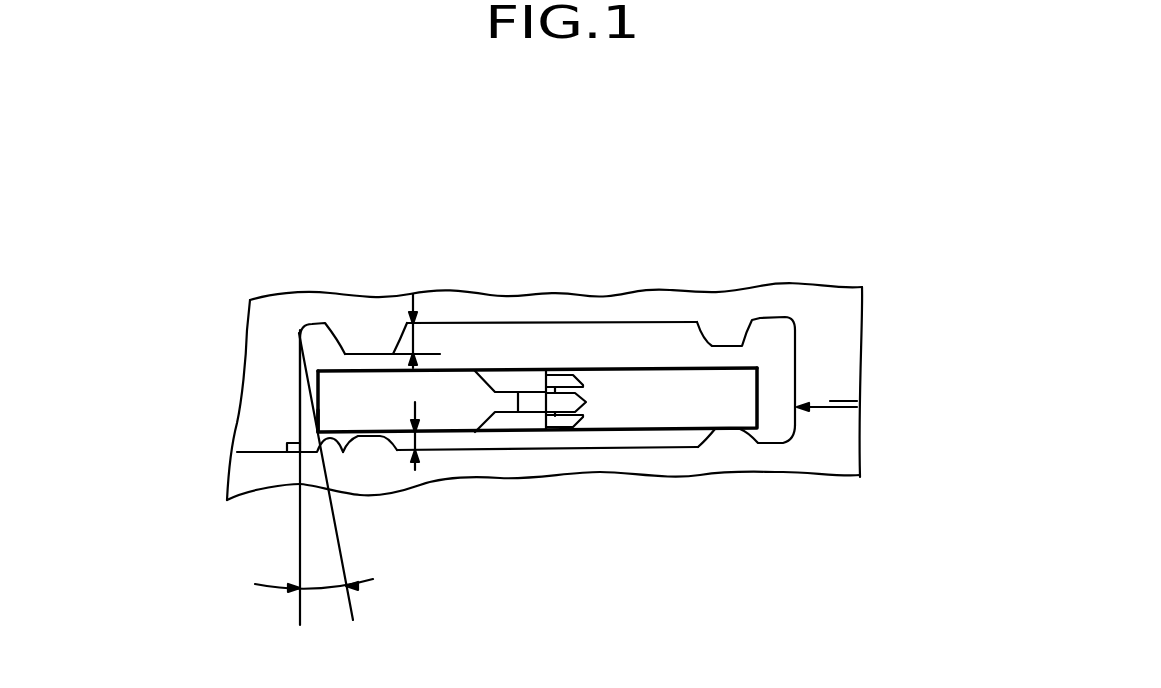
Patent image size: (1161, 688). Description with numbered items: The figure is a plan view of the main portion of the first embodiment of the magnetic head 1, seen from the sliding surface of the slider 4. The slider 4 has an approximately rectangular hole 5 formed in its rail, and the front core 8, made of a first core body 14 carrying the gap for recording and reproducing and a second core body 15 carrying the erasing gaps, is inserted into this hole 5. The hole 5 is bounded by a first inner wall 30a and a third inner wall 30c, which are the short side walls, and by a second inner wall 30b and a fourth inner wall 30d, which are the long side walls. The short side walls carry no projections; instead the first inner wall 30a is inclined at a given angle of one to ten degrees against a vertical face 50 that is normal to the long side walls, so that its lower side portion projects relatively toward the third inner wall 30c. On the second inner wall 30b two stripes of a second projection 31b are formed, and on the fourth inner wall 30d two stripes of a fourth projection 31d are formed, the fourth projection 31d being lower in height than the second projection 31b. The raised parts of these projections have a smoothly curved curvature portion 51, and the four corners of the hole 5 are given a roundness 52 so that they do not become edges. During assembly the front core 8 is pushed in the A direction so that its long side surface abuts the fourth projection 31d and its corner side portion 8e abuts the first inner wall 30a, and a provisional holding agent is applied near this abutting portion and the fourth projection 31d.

The magnetic head 1 is at (868, 265).
The slider 4 is at (835, 345).
The hole 5 is at (663, 338).
The front core 8 is at (607, 343).
The side portion 8e is at (313, 419).
The first core body 14 is at (467, 358).
The second core body 15 is at (627, 343).
The first inner wall 30a is at (302, 352).
The second inner wall 30b is at (527, 323).
The third inner wall 30c is at (790, 369).
The fourth inner wall 30d is at (646, 447).
The second projection 31b is at (368, 348).
The fourth projection 31d is at (367, 443).
The vertical face 50 is at (300, 517).
The curvature portion 51 is at (397, 318).
The roundness 52 is at (302, 333).